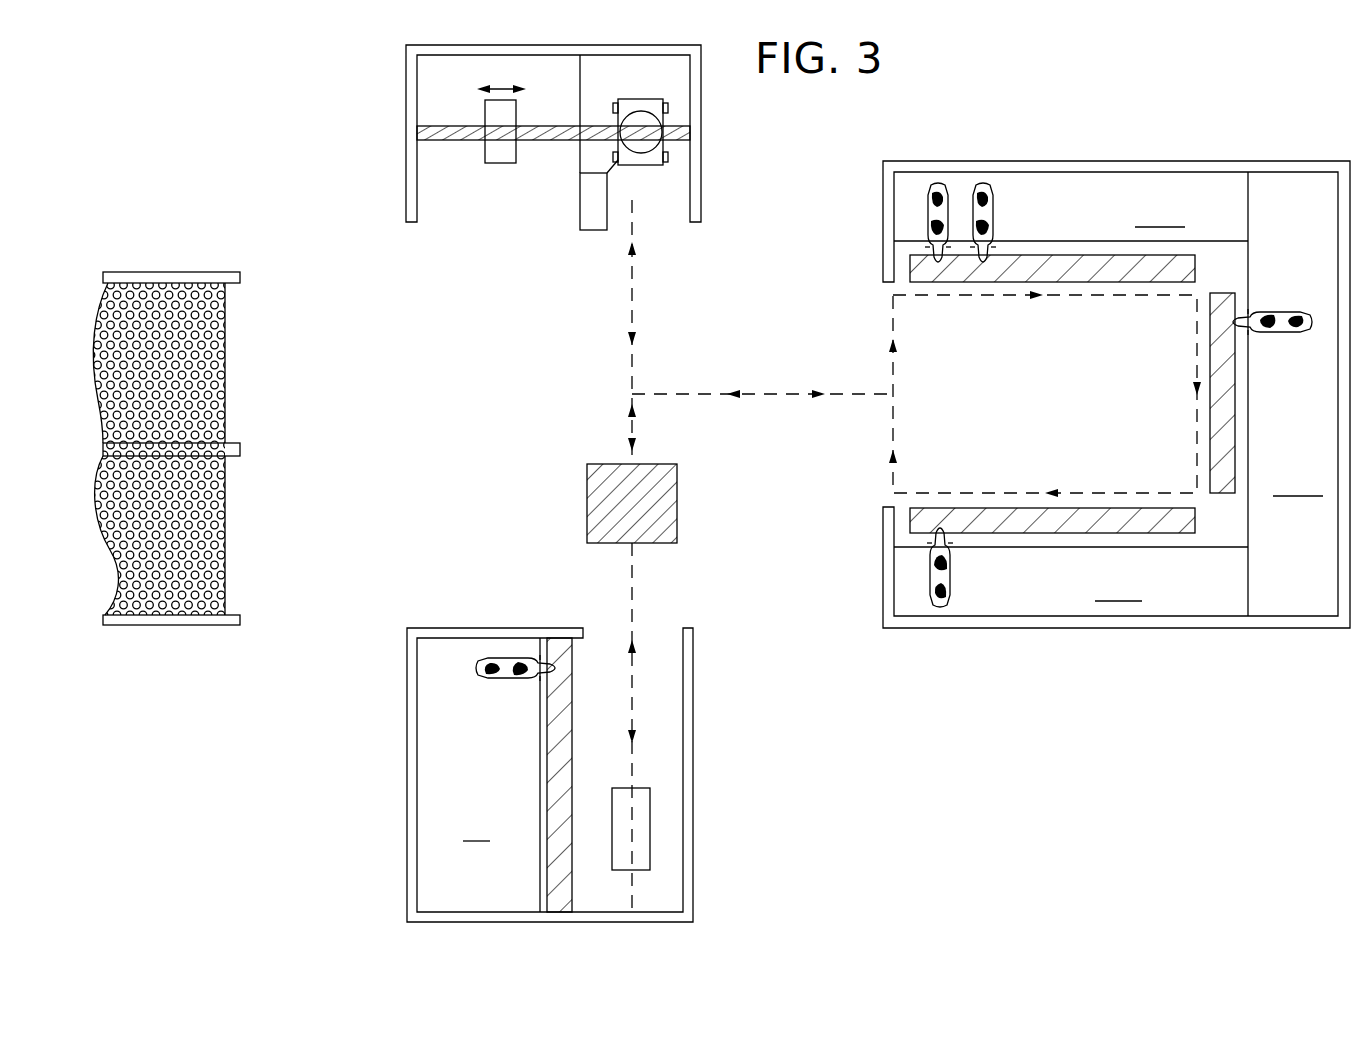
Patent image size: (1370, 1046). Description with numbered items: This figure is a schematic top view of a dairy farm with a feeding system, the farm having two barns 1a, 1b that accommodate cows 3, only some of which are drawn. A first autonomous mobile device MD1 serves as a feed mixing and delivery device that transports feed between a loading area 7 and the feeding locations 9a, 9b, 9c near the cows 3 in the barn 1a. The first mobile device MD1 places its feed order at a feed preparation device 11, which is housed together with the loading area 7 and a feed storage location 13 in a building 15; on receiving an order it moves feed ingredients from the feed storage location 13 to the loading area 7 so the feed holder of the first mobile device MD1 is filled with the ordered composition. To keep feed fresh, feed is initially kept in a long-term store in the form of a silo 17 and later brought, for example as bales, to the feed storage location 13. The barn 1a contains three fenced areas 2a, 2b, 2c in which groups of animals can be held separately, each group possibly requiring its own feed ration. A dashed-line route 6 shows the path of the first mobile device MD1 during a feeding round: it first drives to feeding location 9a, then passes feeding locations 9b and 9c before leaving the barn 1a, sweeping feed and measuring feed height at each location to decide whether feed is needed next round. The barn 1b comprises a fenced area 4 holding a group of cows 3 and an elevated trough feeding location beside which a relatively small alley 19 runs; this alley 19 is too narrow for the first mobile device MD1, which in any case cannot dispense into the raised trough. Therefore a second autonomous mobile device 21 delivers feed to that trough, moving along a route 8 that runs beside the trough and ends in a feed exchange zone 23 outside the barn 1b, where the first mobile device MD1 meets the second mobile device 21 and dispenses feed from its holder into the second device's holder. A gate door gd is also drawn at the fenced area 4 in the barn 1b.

The barn 1a is at (1130, 167).
The barn 1b is at (687, 754).
The fenced area 2a is at (1160, 206).
The fenced area 2b is at (1298, 476).
The fenced area 2c is at (1118, 581).
The cows 3 is at (935, 213).
The fenced area 4 is at (476, 820).
The route 6 is at (670, 394).
The loading area 7 is at (658, 208).
The route 8 is at (632, 597).
The feeding location 9a is at (1062, 268).
The feeding location 9b is at (1222, 427).
The feeding location 9c is at (1080, 518).
The feed preparation device 11 is at (500, 151).
The feed storage location 13 is at (468, 200).
The building 15 is at (540, 50).
The silo 17 is at (225, 272).
The alley 19 is at (655, 690).
The second autonomous mobile device 21 is at (648, 828).
The feed exchange zone 23 is at (660, 497).
The gate door gd is at (556, 727).
The first autonomous mobile device MD1 is at (624, 164).